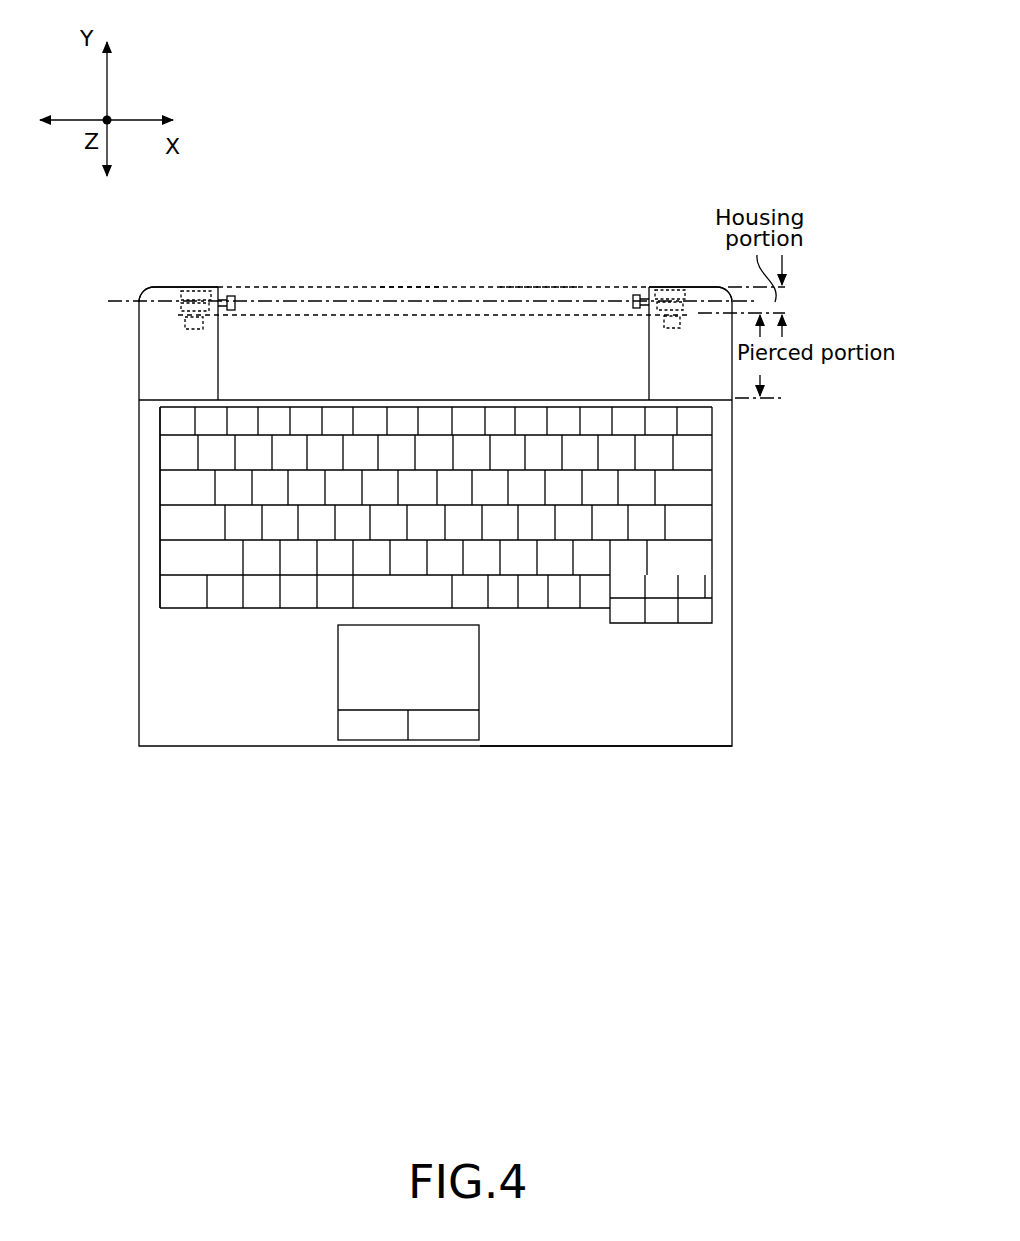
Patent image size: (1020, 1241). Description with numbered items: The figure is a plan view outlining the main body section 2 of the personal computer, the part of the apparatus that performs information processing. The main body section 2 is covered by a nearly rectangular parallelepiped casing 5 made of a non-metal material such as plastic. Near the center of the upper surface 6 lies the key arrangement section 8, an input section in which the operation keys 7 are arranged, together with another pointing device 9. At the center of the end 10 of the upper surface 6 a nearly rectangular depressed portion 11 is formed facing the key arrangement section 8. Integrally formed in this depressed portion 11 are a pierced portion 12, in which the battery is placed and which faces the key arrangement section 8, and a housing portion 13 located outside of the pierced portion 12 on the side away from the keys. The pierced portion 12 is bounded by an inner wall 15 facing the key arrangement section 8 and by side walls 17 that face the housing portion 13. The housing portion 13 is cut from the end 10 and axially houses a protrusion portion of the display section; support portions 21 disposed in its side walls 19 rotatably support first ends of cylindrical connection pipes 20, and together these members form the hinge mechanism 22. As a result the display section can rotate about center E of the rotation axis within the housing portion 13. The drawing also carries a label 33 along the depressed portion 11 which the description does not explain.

The main body section 2 is at (290, 769).
The casing 5 is at (618, 748).
The upper surface 6 is at (565, 738).
The operation keys 7 is at (188, 562).
The key arrangement section 8 is at (153, 480).
The pointing device 9 is at (421, 699).
The end 10 is at (320, 313).
The depressed portion 11 is at (479, 283).
The pierced portion 12 is at (222, 360).
The housing portion 13 is at (413, 290).
The inner wall 15 is at (450, 397).
The side walls 17 is at (648, 362).
The side walls 19 is at (233, 311).
The connection pipes 20 is at (229, 296).
The support portions 21 is at (215, 291).
The hinge mechanism 22 is at (206, 284).
The rear wall of display housing 33 is at (538, 286).
The center of rotation axis E is at (601, 300).